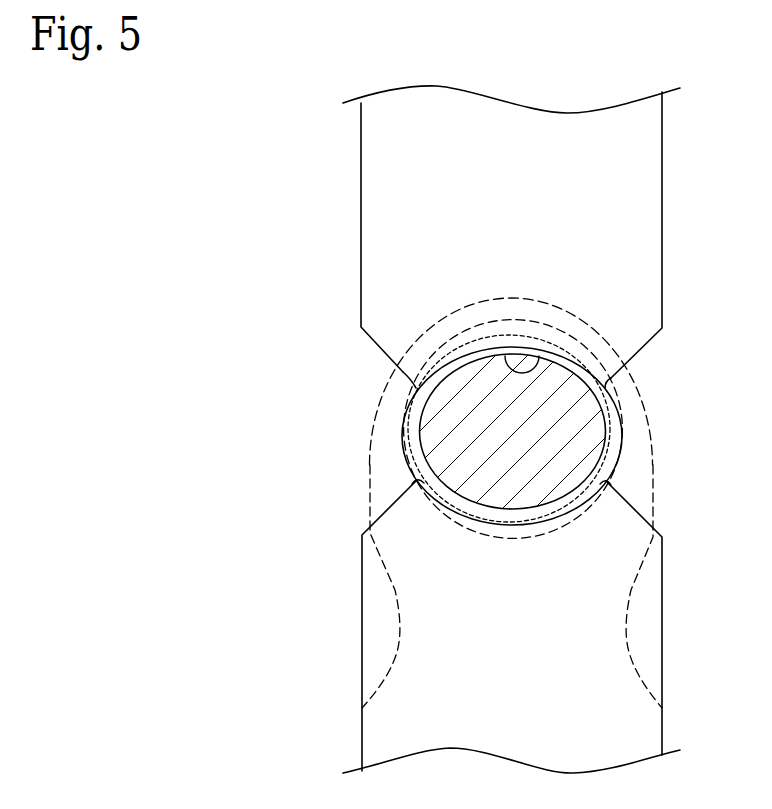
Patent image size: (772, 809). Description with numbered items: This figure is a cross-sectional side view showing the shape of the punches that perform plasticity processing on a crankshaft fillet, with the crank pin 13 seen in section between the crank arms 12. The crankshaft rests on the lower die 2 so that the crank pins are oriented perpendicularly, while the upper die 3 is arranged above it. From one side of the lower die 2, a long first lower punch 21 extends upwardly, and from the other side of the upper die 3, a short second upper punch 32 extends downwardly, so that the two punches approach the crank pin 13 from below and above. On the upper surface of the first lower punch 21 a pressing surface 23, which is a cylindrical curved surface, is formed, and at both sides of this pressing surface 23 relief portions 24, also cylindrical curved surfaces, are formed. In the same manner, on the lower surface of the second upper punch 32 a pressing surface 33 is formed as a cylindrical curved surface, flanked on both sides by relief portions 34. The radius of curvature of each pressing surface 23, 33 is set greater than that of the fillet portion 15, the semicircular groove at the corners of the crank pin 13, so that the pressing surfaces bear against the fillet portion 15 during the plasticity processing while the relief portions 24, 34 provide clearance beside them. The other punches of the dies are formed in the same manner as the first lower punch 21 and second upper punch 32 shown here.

The lower die 2 is at (362, 658).
The upper die 3 is at (360, 220).
The crank arm 12 is at (385, 484).
The crank pin 13 is at (618, 422).
The fillet portion 15 is at (612, 447).
The first lower punch 21 is at (645, 637).
The pressing surface 23 is at (548, 492).
The relief portion 24 is at (606, 486).
The second upper punch 32 is at (641, 244).
The pressing surface 33 is at (540, 365).
The relief portion 34 is at (615, 392).